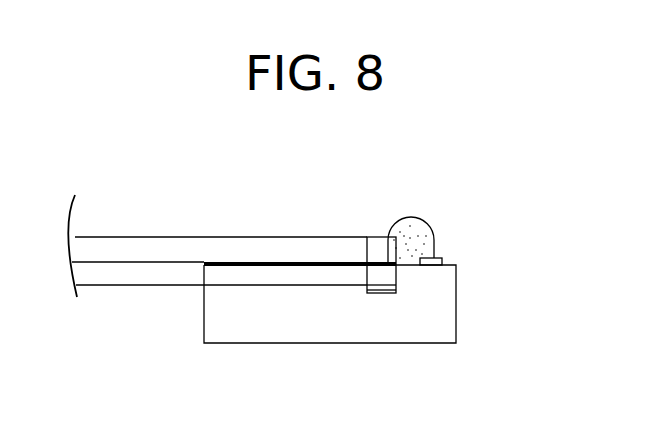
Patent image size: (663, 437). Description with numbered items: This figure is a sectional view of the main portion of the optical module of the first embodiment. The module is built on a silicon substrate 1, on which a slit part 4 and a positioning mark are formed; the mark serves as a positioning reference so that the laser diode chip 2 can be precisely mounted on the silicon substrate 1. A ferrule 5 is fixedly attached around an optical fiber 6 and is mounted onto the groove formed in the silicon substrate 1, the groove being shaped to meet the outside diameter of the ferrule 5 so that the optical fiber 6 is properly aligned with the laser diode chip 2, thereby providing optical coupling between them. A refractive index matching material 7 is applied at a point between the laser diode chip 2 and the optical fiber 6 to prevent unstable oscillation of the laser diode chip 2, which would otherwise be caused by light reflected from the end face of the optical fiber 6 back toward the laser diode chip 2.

The silicon substrate 1 is at (282, 332).
The laser diode chip 2 is at (440, 258).
The slit part 4 is at (384, 293).
The ferrule 5 is at (165, 236).
The optical fiber 6 is at (372, 264).
The refractive index matching material 7 is at (411, 229).